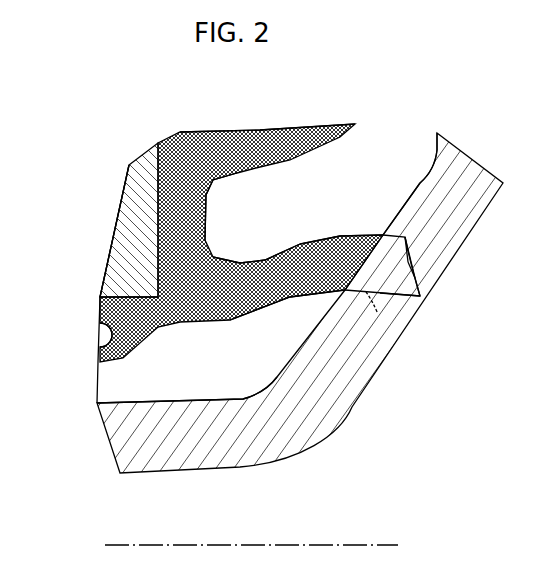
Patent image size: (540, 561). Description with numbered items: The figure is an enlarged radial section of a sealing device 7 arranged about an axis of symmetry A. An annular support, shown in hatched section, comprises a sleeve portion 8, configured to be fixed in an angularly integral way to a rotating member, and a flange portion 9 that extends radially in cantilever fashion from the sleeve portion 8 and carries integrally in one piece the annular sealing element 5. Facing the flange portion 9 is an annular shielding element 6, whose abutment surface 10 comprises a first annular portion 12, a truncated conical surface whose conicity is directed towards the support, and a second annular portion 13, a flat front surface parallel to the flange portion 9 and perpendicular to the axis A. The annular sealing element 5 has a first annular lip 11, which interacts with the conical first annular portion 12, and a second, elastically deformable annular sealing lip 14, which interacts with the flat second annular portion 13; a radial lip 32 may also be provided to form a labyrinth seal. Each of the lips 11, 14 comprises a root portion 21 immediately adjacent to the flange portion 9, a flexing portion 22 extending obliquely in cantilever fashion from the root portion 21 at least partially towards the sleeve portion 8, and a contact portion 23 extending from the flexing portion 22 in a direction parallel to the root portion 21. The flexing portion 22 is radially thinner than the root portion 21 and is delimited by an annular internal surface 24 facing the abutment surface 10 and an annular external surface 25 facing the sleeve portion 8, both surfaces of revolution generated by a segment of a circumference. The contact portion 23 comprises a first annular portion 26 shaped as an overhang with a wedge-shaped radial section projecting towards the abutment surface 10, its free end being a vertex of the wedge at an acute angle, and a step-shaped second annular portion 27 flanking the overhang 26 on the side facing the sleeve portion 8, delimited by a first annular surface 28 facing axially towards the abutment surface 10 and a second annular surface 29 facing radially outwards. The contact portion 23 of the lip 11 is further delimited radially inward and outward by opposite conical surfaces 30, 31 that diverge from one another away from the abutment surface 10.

The annular sealing element 5 is at (150, 188).
The annular shielding element 6 is at (171, 469).
The sealing device 7 is at (87, 355).
The sleeve portion 8 is at (382, 265).
The flange portion 9 is at (116, 243).
The abutment surface 10 is at (421, 179).
The first annular lip 11 is at (300, 238).
The first annular portion of the abutment surface 12 is at (276, 362).
The second annular portion of the abutment surface 13 is at (433, 137).
The second annular sealing lip 14 is at (262, 127).
The root portion 21 is at (192, 145).
The flexing portion 22 is at (325, 238).
The contact portion 23 is at (393, 322).
The annular internal surface 24 is at (290, 298).
The annular external surface 25 is at (290, 238).
The first annular portion of the contact portion 26 is at (426, 290).
The second annular portion of the contact portion 27 is at (416, 254).
The first annular surface 28 is at (424, 280).
The second annular surface 29 is at (399, 228).
The conical surface 30 is at (428, 274).
The conical surface 31 is at (414, 306).
The radial lip 32 is at (112, 363).
The axis of symmetry A is at (322, 545).